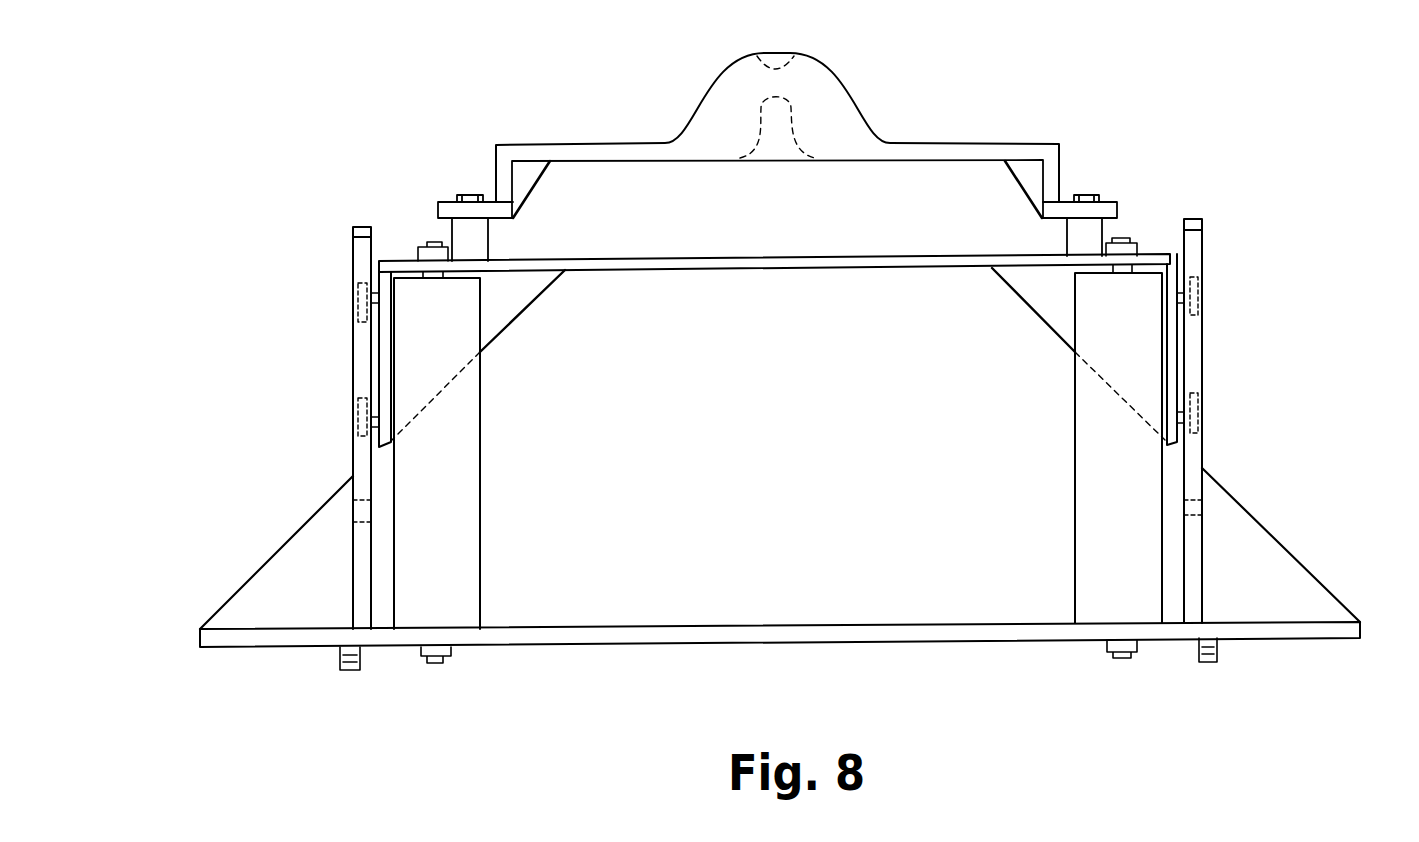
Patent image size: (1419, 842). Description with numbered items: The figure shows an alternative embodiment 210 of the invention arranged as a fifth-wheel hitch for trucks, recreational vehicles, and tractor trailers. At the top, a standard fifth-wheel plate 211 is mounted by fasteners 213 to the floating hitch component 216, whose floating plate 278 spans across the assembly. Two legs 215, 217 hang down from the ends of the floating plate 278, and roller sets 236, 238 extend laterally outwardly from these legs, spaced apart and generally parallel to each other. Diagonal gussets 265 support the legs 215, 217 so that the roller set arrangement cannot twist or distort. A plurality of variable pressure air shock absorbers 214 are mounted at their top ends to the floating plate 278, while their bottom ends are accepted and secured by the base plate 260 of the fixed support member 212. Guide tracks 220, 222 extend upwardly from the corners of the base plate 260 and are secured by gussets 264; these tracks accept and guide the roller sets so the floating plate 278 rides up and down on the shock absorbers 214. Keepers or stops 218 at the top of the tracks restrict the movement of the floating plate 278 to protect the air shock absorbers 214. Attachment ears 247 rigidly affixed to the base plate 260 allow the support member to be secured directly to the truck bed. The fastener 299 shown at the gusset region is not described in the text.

The alternative embodiment 210 is at (1243, 232).
The fifth-wheel plate 211 is at (902, 140).
The fixed support member 212 is at (1310, 648).
The fasteners 213 is at (470, 194).
The variable pressure air shock absorbers 214 is at (455, 489).
The leg 215 is at (380, 351).
The floating hitch component 216 is at (1157, 227).
The leg 217 is at (1178, 345).
The keepers or stops 218 is at (360, 226).
The guide track 220 is at (1198, 580).
The guide track 222 is at (362, 586).
The roller set 236 is at (357, 300).
The roller set 238 is at (358, 432).
The attachment ears 247 is at (350, 671).
The base plate 260 is at (757, 644).
The gussets 264 is at (272, 574).
The gussets 265 is at (520, 300).
The floating plate 278 is at (772, 258).
The gusset fastener 299 is at (355, 508).